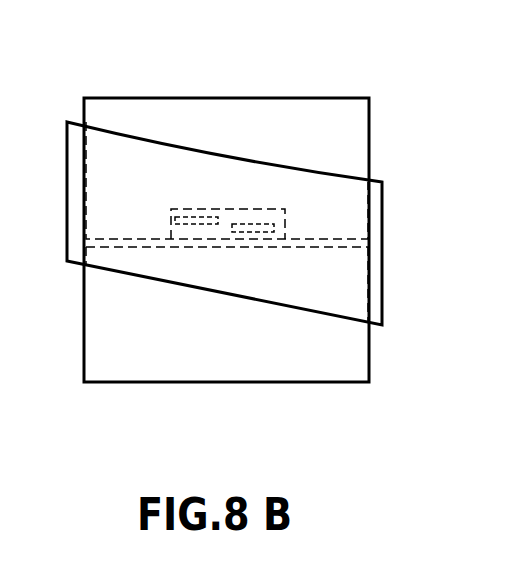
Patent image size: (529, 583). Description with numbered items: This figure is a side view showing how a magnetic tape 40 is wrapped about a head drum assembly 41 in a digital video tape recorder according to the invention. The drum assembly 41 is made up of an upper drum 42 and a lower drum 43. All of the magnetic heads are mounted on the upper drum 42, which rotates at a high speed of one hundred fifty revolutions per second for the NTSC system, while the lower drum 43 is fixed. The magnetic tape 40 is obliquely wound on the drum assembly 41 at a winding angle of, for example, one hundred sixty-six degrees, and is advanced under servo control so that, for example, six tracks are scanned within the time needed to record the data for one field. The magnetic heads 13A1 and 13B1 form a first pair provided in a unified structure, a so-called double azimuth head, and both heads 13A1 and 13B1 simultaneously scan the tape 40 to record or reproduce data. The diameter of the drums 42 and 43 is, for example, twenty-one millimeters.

The magnetic tape 40 is at (67, 167).
The drum assembly 41 is at (227, 82).
The upper drum 42 is at (312, 97).
The lower drum 43 is at (84, 325).
The magnetic head 13A1 is at (190, 224).
The magnetic head 13B1 is at (252, 232).